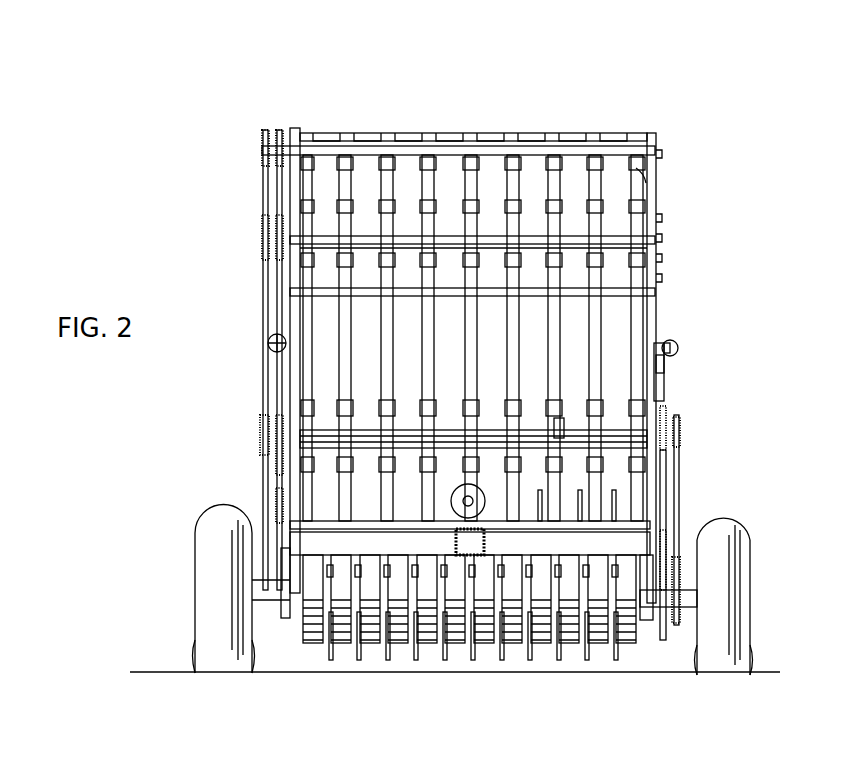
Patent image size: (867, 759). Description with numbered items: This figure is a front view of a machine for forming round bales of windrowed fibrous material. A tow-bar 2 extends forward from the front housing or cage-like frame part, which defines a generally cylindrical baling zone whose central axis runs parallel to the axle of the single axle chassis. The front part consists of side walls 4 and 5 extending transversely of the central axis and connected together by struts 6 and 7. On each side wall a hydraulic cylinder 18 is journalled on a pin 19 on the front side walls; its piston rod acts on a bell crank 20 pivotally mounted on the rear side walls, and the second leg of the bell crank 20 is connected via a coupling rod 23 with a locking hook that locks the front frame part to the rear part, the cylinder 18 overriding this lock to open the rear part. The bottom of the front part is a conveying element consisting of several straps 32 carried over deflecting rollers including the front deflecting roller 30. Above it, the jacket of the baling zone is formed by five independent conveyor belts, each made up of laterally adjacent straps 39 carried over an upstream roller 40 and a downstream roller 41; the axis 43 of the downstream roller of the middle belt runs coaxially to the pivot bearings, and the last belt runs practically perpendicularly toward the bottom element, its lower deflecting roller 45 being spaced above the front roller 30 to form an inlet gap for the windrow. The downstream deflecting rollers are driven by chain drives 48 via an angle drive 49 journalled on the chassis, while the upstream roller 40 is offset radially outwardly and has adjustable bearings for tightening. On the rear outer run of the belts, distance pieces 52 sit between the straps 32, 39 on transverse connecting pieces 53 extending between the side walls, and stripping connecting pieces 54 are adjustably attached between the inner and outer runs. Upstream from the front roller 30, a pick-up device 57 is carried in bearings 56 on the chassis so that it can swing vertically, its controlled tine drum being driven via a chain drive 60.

The tow-bar 2 is at (479, 556).
The side wall 4 is at (290, 371).
The side wall 5 is at (656, 217).
The strut 6 is at (537, 238).
The strut 7 is at (509, 146).
The hydraulic cylinder 18 is at (668, 360).
The pin 19 is at (668, 342).
The bell crank 20 is at (667, 388).
The coupling rod 23 is at (666, 415).
The deflecting roller 30 is at (298, 522).
The straps 32 is at (591, 510).
The straps 39 is at (412, 170).
The upstream roller 40 is at (298, 293).
The downstream roller 41 is at (346, 240).
The axis 43 is at (262, 152).
The deflecting roller 45 is at (258, 427).
The chain drives 48 is at (263, 200).
The angle drive 49 is at (463, 486).
The distance pieces 52 is at (554, 160).
The transverse connecting pieces 53 is at (318, 137).
The stripping connecting pieces 54 is at (430, 430).
The bearings 56 is at (292, 556).
The pick-up device 57 is at (306, 622).
The chain drive 60 is at (668, 492).